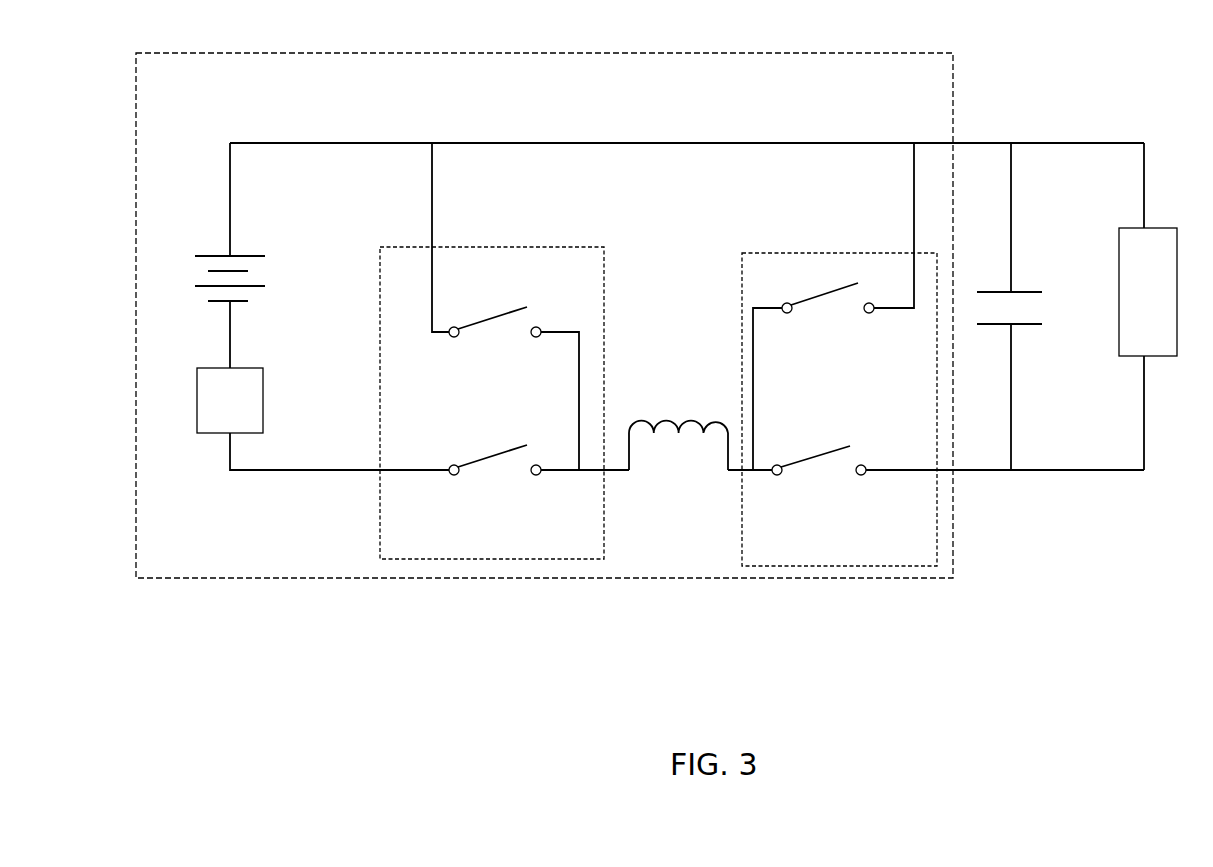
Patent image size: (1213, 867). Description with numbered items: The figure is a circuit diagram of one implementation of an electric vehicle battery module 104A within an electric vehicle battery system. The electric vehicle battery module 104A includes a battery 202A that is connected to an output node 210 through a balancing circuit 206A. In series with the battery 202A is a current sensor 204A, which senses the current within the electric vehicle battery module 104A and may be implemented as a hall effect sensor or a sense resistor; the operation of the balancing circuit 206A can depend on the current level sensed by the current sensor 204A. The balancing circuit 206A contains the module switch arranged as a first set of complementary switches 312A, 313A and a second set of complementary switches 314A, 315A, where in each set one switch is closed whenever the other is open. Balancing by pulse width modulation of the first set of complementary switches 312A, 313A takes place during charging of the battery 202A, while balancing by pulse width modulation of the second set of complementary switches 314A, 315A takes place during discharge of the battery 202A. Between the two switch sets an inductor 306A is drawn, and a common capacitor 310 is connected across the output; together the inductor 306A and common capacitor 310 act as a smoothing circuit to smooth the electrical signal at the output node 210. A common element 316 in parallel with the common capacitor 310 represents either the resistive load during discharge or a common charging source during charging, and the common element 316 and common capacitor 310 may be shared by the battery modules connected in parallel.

The electric vehicle battery module 104A is at (280, 578).
The battery 202A is at (252, 286).
The current sensor 204A is at (230, 400).
The balancing circuit 206A is at (380, 503).
The output node 210 is at (878, 143).
The inductor 306A is at (636, 428).
The common capacitor 310 is at (1035, 290).
The switch 312A is at (859, 476).
The switch 313A is at (867, 314).
The switch 314A is at (451, 476).
The switch 315A is at (451, 338).
The common element 316 is at (1148, 306).